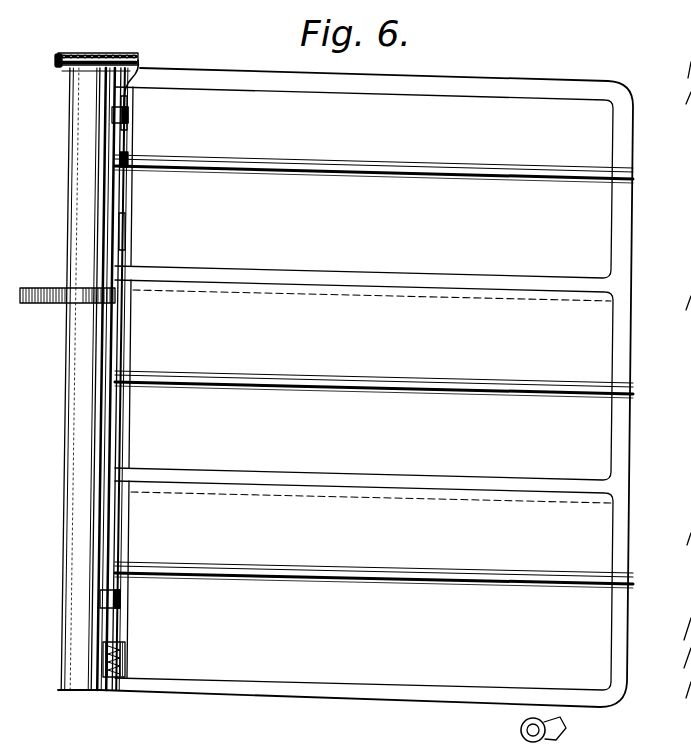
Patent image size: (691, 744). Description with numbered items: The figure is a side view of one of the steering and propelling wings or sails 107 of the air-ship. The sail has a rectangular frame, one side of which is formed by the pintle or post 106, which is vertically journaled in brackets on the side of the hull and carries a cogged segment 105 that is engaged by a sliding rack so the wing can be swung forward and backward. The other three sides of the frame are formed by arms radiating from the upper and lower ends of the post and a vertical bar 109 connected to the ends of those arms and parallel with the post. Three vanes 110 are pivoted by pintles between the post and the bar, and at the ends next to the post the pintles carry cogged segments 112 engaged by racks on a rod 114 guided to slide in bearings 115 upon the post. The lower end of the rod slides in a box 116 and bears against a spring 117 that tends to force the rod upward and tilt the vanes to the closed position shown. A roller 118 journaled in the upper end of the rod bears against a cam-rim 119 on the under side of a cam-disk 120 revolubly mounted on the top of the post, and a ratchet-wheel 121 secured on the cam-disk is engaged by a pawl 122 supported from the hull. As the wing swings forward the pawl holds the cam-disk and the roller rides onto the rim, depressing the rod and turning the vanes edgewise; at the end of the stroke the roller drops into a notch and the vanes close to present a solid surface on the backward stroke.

The cogged segment 105 is at (42, 288).
The pintle or post 106 is at (85, 200).
The propelling and steering wing or sail 107 is at (457, 74).
The vertical bar 109 is at (630, 441).
The vane 110 is at (364, 388).
The cogged segment 112 is at (131, 152).
The rod 114 is at (133, 101).
The bearing 115 is at (130, 117).
The box 116 is at (125, 652).
The spring 117 is at (125, 665).
The roller 118 is at (142, 62).
The cam-rim 119 is at (66, 70).
The cam-disk 120 is at (62, 54).
The ratchet-wheel 121 is at (89, 53).
The pawl 122 is at (522, 717).